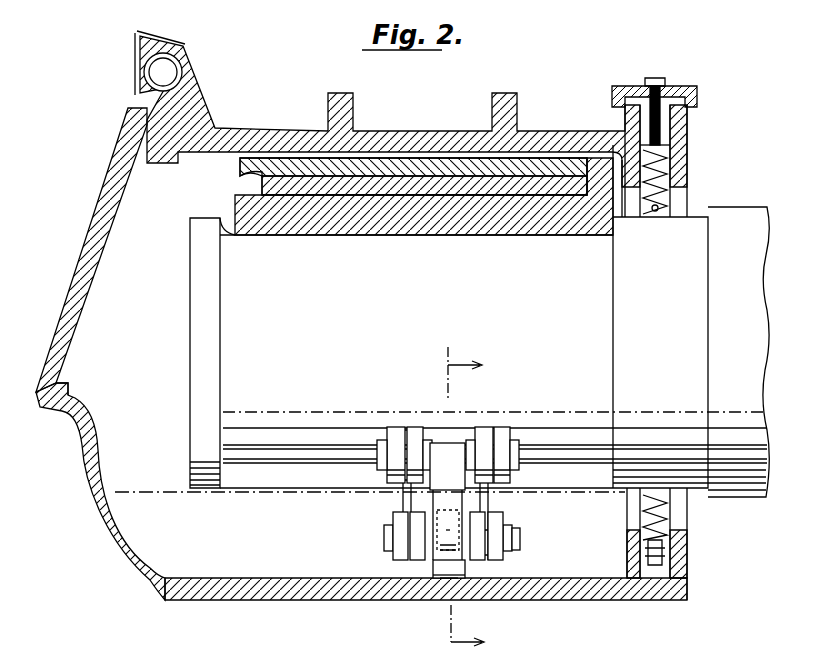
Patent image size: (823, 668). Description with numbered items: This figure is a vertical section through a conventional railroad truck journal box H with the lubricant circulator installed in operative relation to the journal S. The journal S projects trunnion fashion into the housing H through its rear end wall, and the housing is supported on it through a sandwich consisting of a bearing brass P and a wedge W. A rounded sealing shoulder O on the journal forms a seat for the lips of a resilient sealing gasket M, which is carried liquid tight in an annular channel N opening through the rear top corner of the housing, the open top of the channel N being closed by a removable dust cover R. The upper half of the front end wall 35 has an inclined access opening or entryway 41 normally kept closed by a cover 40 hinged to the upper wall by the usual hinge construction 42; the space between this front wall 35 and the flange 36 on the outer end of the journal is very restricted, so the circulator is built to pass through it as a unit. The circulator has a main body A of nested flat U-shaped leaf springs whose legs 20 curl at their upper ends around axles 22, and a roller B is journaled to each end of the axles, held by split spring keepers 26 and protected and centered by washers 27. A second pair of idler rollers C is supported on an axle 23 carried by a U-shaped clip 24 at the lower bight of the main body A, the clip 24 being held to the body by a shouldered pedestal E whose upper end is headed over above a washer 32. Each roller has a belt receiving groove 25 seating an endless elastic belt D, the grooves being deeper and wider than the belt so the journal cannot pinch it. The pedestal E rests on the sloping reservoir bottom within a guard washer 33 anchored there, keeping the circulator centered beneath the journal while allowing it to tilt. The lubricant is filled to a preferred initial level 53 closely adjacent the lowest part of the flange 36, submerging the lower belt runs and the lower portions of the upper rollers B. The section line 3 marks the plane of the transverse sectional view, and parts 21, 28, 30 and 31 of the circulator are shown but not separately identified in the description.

The hinge construction 42 is at (172, 78).
The journal box H is at (350, 108).
The wedge W is at (242, 173).
The bearing brass P is at (240, 209).
The cover 40 is at (86, 248).
The access opening 41 is at (58, 380).
The front end wall 35 is at (143, 563).
The flange 36 is at (212, 300).
The journal S is at (444, 282).
The sealing shoulder O is at (692, 251).
The axles 22 is at (520, 455).
The initial level 53 is at (160, 491).
The resilient sealing gasket M is at (667, 207).
The removable dust cover R is at (705, 92).
The annular channel N is at (660, 556).
The section line 3- 3 is at (466, 503).
The roller B is at (380, 429).
The belt receiving groove 25 is at (411, 427).
The split spring keepers 26 is at (380, 442).
The washers 27 is at (430, 440).
The bracket 21 is at (445, 443).
The legs 20 is at (445, 521).
The washer 32 is at (445, 527).
The pin 31 is at (454, 528).
The idler rollers C is at (380, 554).
The main body A is at (462, 510).
The endless elastic belt D is at (399, 496).
The axle 23 is at (520, 532).
The roller 28 is at (493, 558).
The base block 30 is at (438, 561).
The shouldered pedestal E is at (440, 580).
The washer 33 is at (437, 578).
The U-shaped clip 24 is at (468, 546).